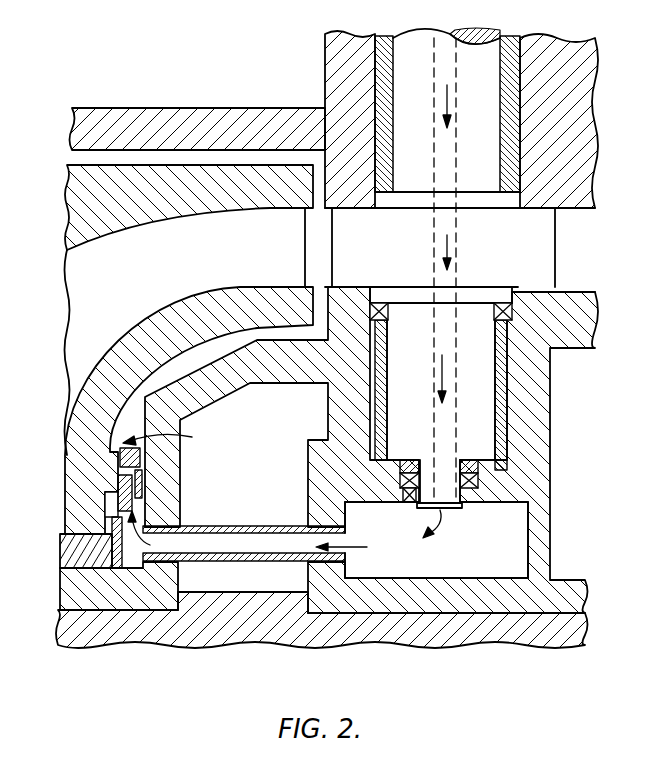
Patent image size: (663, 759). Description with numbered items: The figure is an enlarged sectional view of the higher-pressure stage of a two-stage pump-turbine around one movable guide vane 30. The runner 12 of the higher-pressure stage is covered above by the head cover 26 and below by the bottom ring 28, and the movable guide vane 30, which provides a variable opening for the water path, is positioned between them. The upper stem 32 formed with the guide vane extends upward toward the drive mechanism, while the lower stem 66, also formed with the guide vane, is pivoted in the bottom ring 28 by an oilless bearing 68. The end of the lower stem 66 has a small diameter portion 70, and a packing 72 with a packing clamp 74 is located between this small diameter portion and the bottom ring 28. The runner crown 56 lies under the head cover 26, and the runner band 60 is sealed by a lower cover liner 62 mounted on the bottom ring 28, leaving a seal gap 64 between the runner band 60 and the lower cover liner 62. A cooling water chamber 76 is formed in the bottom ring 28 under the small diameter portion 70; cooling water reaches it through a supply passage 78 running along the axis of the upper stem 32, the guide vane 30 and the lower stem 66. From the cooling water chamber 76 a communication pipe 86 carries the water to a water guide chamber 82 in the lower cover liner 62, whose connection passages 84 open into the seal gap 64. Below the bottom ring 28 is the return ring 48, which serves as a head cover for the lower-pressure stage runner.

The runner 12 is at (65, 255).
The head cover 26 is at (195, 118).
The bottom ring 28 is at (308, 368).
The movable guide vane 30 is at (540, 259).
The upper stem 32 is at (488, 100).
The return ring 48 is at (259, 623).
The runner crown 56 is at (188, 196).
The runner band 60 is at (143, 337).
The lower cover liner 62 is at (176, 438).
The seal gap 64 is at (113, 492).
The lower stem 66 is at (482, 378).
The oilless bearing 68 is at (503, 417).
The small diameter portion 70 is at (456, 506).
The packing 72 is at (409, 494).
The packing clamp 74 is at (408, 460).
The cooling water chamber 76 is at (444, 575).
The supply passage 78 is at (458, 14).
The water guide chamber 82 is at (133, 567).
The connection passage 84 is at (130, 469).
The communication pipe 86 is at (253, 526).